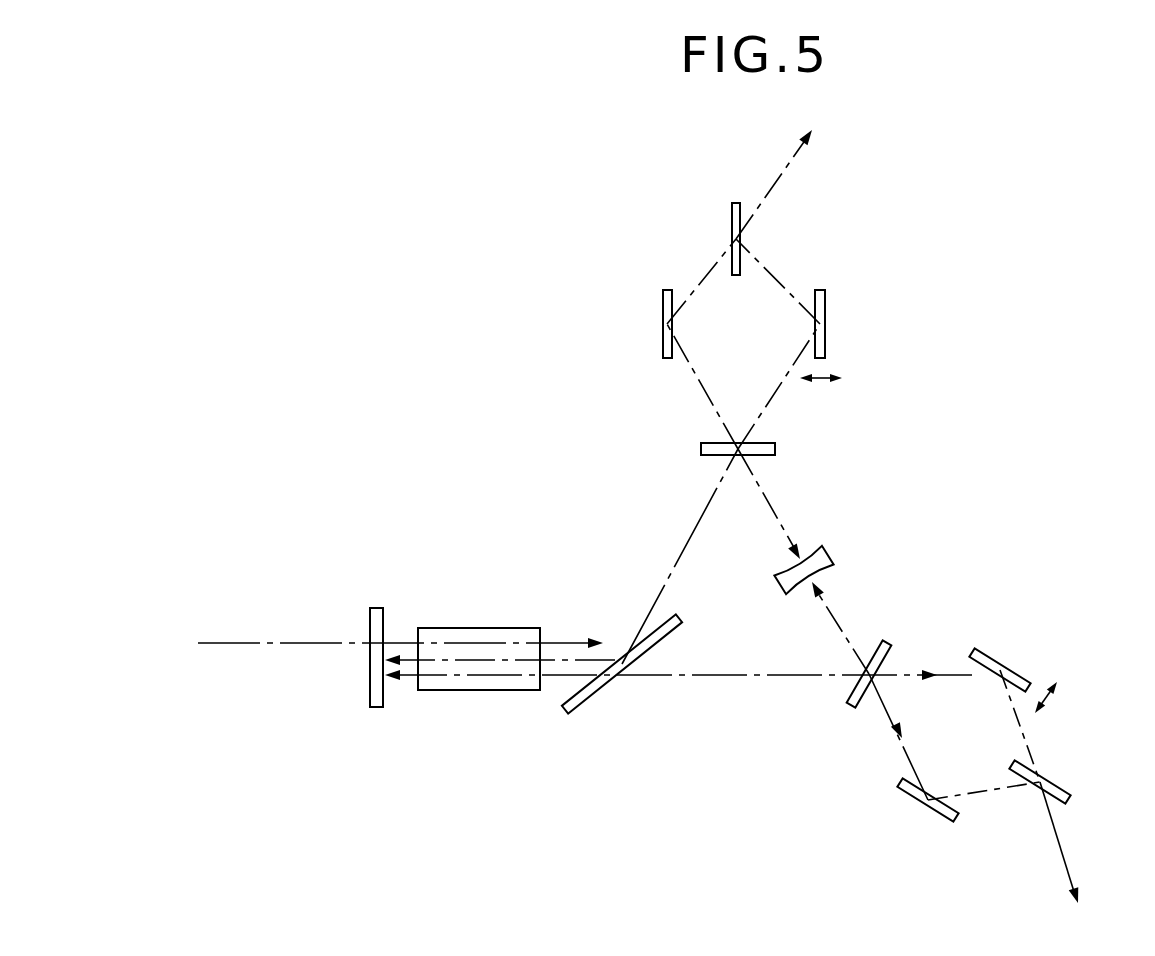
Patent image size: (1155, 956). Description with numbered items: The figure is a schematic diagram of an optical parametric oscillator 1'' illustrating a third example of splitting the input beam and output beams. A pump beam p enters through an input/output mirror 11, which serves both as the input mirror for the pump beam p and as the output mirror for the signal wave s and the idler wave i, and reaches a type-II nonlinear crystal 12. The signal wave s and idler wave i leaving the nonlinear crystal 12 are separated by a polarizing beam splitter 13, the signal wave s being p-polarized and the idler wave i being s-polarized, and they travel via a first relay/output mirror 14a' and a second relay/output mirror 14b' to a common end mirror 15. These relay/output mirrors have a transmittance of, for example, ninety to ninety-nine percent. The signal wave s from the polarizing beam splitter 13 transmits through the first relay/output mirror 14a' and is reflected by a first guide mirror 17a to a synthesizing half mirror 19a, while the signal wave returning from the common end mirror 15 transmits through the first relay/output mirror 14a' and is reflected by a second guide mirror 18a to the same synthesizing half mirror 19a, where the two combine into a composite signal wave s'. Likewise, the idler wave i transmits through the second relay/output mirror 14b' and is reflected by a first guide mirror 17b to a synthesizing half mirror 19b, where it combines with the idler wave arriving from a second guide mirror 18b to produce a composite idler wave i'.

The optical parametric oscillator 1'' is at (435, 408).
The input/output mirror 11 is at (372, 689).
The type-II nonlinear crystal 12 is at (486, 628).
The polarizing beam splitter 13 is at (608, 673).
The first relay/output mirror 14a' is at (833, 710).
The second relay/output mirror 14b' is at (708, 477).
The common end mirror 15 is at (822, 554).
The first guide mirror 17a is at (1003, 662).
The first guide mirror 17b is at (826, 320).
The second guide mirror 18a is at (923, 803).
The second guide mirror 18b is at (663, 323).
The synthesizing half mirror 19a is at (1046, 776).
The synthesizing half mirror 19b is at (732, 227).
The pump beam p is at (237, 645).
The signal wave s is at (678, 706).
The composite signal wave s' is at (1078, 843).
The idler wave i is at (677, 556).
The composite idler wave i' is at (776, 183).